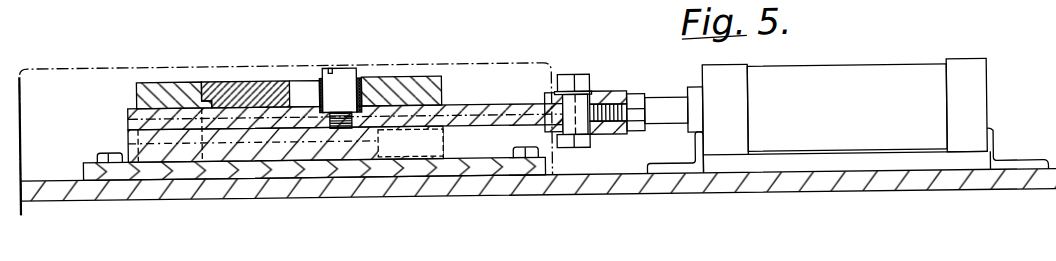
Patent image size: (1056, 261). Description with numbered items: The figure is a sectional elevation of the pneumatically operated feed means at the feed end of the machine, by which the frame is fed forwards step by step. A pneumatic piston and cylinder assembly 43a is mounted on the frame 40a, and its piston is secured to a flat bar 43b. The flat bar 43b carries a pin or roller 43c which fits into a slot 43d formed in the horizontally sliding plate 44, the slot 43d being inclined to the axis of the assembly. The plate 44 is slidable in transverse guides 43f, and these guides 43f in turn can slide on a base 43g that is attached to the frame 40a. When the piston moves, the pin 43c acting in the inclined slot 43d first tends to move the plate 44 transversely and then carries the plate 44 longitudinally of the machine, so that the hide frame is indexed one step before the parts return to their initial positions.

The frame 40a is at (130, 150).
The pneumatic piston and cylinder assembly 43a is at (880, 69).
The flat bar 43b is at (527, 106).
The pin or roller 43c is at (420, 86).
The slot 43d is at (380, 68).
The transverse guide 43f is at (162, 86).
The base 43g is at (443, 140).
The horizontally sliding plate 44 is at (320, 65).